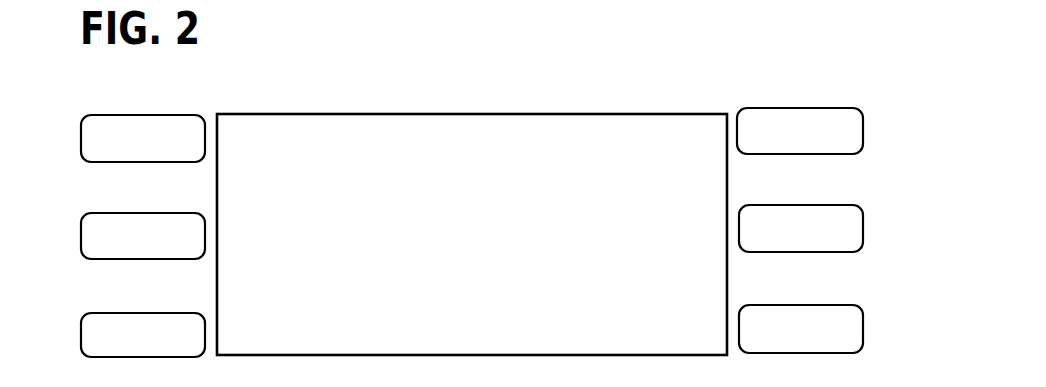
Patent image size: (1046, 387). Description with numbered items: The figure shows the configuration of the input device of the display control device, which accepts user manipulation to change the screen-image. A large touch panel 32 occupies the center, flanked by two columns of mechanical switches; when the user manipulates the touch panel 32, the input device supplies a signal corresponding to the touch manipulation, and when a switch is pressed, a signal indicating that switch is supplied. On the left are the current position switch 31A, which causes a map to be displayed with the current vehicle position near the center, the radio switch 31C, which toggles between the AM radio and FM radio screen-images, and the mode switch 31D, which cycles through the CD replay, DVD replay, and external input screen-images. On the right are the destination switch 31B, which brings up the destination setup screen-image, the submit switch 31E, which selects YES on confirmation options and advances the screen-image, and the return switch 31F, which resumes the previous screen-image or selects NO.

The current position switch 31A is at (152, 115).
The destination switch 31B is at (781, 108).
The radio switch 31C is at (152, 213).
The mode switch 31D is at (152, 313).
The submit switch 31E is at (781, 205).
The return switch 31F is at (781, 305).
The touch panel 32 is at (489, 113).